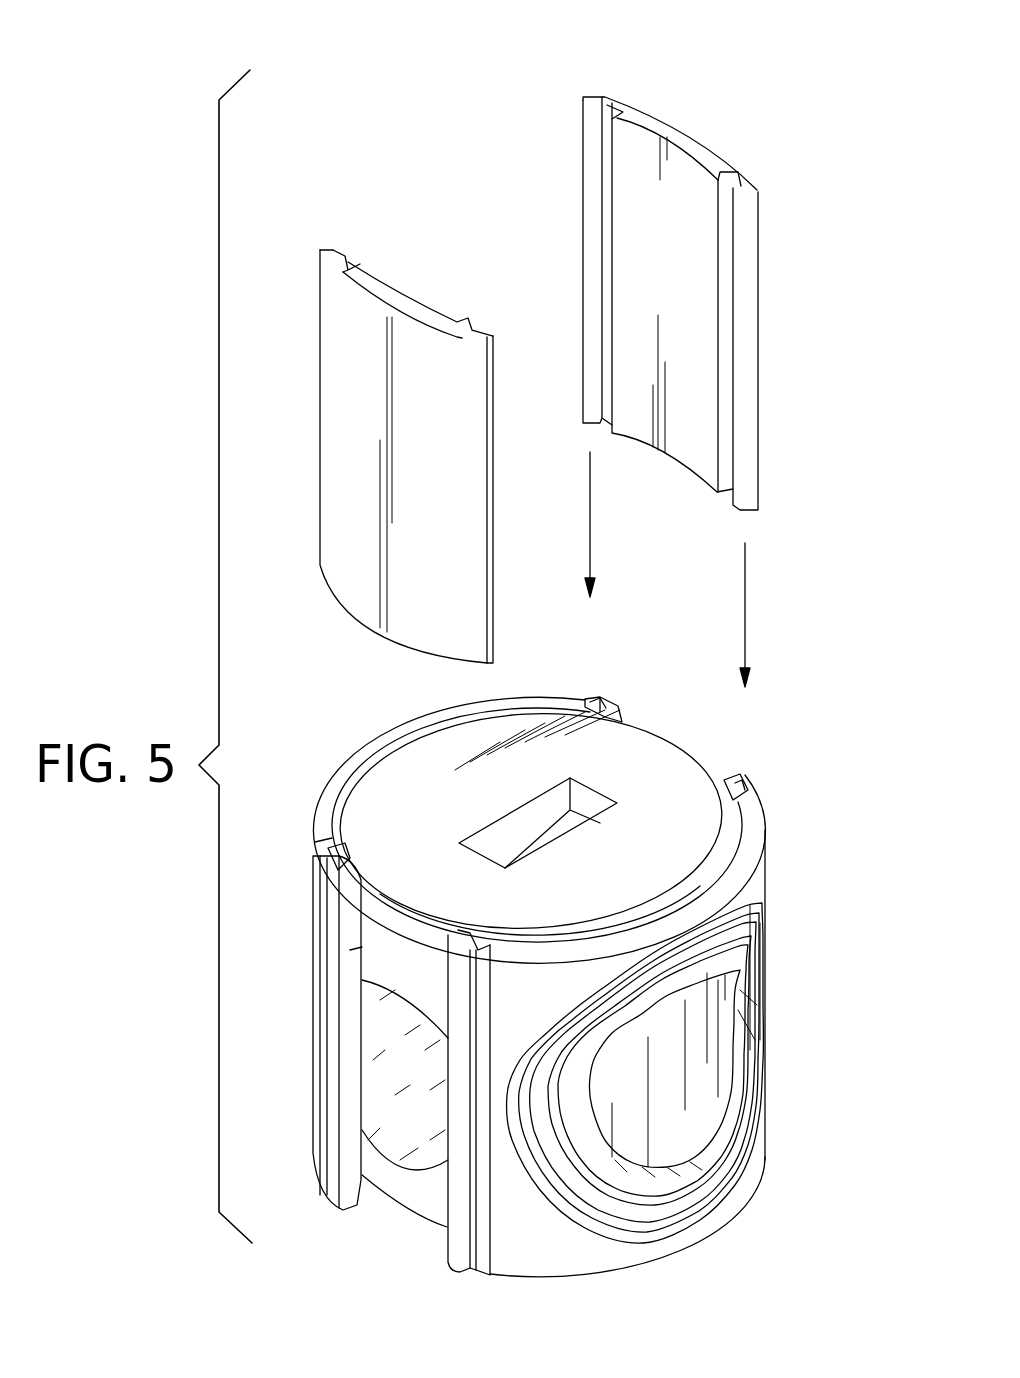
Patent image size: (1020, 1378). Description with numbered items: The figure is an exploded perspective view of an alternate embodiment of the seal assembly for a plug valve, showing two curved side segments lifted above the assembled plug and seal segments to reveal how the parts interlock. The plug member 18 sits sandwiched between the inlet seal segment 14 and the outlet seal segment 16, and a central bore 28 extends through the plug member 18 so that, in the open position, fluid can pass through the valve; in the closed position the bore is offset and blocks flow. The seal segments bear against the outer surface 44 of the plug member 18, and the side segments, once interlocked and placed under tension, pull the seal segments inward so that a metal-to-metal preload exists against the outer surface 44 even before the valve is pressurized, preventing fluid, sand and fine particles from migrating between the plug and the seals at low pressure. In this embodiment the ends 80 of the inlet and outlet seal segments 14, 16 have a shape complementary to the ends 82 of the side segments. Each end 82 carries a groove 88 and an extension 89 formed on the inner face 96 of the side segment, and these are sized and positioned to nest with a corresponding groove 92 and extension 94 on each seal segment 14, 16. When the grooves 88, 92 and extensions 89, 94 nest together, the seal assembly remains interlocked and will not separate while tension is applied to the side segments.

The inlet seal segment 14 is at (528, 1242).
The outlet seal segment 16 is at (312, 822).
The plug member 18 is at (648, 841).
The central bore 28 is at (395, 997).
The outer surface 44 is at (397, 963).
The ends 80 is at (602, 687).
The ends 82 is at (324, 237).
The groove 88 is at (352, 262).
The extension 89 is at (347, 262).
The groove 92 is at (592, 702).
The extension 94 is at (612, 702).
The inner face 96 is at (423, 313).